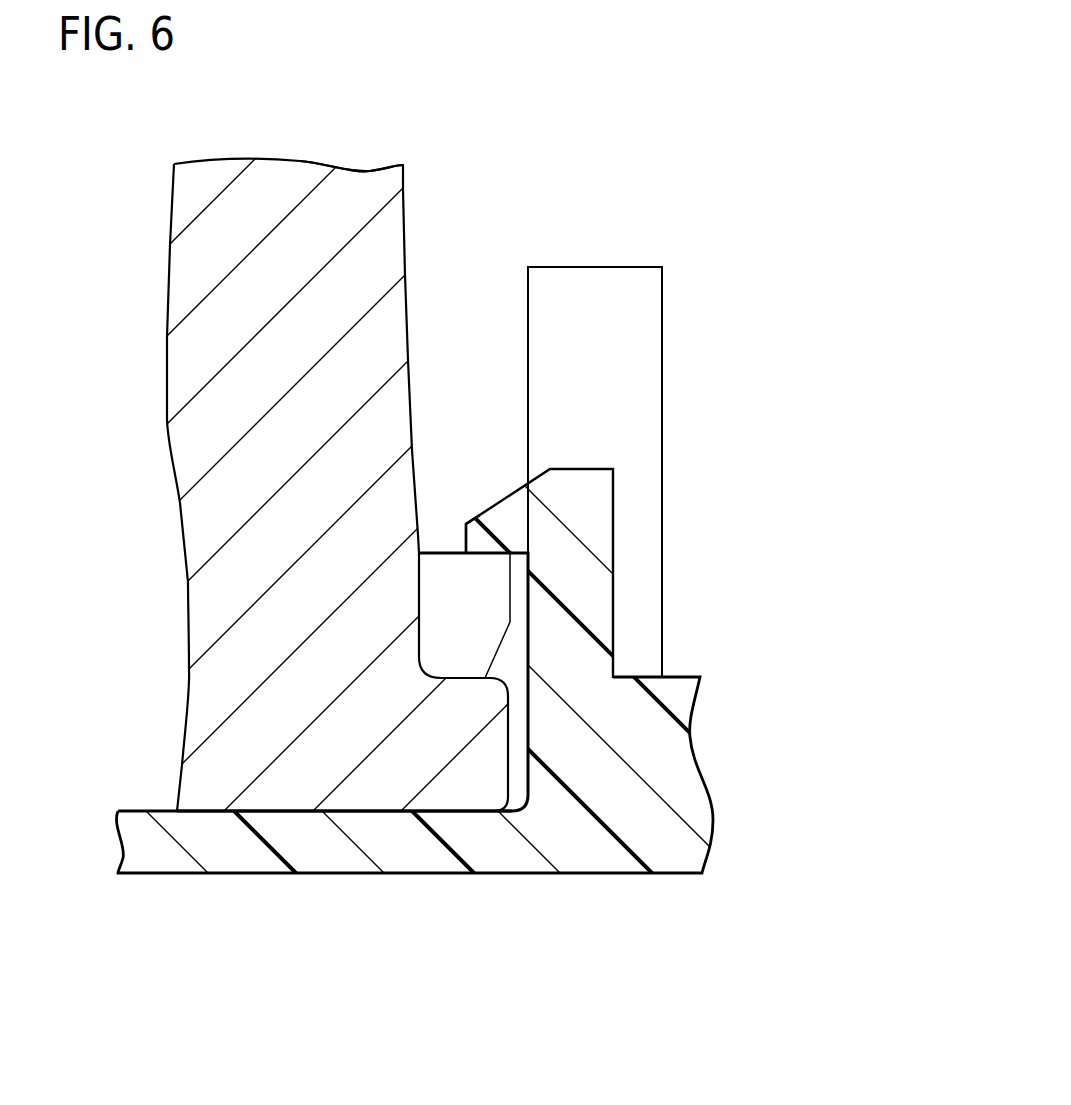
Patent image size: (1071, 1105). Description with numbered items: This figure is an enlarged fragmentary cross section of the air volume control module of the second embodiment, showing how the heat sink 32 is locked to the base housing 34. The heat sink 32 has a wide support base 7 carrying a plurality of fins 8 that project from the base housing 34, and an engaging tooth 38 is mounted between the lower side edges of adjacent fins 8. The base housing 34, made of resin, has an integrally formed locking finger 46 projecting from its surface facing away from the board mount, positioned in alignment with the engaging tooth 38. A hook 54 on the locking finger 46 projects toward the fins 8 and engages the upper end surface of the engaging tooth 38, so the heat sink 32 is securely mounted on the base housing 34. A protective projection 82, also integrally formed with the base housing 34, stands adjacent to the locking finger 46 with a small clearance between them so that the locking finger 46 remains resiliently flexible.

The support base 7 is at (493, 753).
The fins 8 is at (193, 290).
The heat sink 32 is at (398, 184).
The base housing 34 is at (701, 850).
The engaging tooth 38 is at (450, 630).
The locking finger 46 is at (587, 560).
The hook 54 is at (487, 522).
The protective projection 82 is at (603, 282).